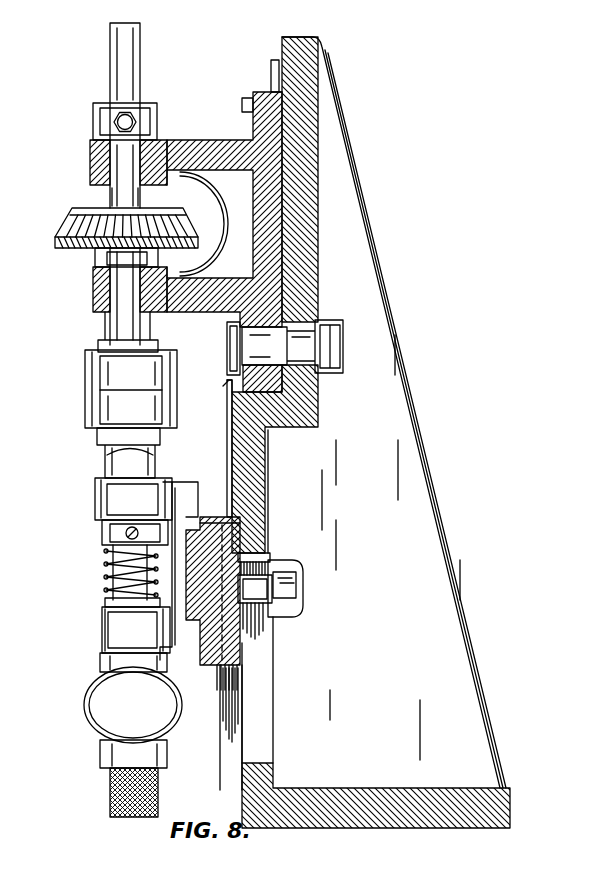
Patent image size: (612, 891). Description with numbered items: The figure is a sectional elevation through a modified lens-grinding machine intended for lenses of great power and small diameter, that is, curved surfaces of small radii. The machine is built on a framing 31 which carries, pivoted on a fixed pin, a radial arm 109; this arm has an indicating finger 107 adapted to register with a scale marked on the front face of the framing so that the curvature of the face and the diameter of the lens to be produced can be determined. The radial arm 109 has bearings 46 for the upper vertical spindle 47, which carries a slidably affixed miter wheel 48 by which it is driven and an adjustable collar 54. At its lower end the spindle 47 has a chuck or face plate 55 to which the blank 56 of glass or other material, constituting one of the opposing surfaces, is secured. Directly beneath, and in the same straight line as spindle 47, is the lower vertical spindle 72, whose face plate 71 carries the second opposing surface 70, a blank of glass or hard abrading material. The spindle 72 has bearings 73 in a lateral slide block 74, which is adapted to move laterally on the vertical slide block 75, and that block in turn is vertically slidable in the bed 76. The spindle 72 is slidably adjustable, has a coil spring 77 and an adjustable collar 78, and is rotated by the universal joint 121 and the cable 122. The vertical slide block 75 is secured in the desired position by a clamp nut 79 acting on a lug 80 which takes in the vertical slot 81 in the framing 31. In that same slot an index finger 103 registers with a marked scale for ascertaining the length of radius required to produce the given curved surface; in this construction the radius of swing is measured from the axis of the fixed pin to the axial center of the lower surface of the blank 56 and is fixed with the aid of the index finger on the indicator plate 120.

The framing 31 is at (268, 468).
The bearings 46 is at (90, 162).
The vertical spindle 47 is at (118, 193).
The miter wheel 48 is at (62, 243).
The adjustable collar 54 is at (157, 119).
The chuck or face plate 55 is at (100, 341).
The blank 56 is at (131, 389).
The second opposing surface 70 is at (131, 405).
The face plate 71 is at (100, 446).
The vertical spindle 72 is at (106, 595).
The bearings 73 is at (133, 565).
The block 74 is at (175, 501).
The block 75 is at (238, 645).
The bed 76 is at (221, 741).
The coil spring 77 is at (106, 569).
The adjustable collar 78 is at (101, 533).
The clamp nut 79 is at (296, 562).
The lug 80 is at (270, 596).
The vertical slot 81 is at (257, 715).
The index finger 103 is at (227, 386).
The indicating finger 107 is at (272, 68).
The radial arm 109 is at (255, 145).
The indicator plate 120 is at (226, 416).
The universal joint 121 is at (133, 710).
The cable 122 is at (108, 792).